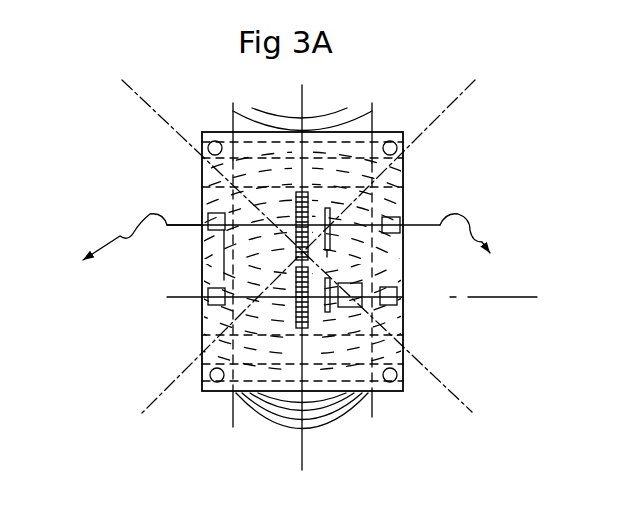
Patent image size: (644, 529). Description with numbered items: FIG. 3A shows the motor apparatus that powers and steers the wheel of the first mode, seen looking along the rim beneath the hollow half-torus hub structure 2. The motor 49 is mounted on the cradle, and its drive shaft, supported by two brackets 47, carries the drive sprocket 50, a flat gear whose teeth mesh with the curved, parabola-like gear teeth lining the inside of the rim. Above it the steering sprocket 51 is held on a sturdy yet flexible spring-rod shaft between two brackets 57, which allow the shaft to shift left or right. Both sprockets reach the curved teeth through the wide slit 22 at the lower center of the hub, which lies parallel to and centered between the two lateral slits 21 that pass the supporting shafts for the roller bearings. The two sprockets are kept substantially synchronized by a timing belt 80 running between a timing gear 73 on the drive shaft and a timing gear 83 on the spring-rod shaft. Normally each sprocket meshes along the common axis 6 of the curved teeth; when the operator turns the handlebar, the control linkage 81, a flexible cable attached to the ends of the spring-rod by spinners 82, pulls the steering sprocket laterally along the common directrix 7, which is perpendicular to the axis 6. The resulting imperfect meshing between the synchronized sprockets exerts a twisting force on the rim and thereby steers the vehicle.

The hollow half-torus hub structure 2 is at (138, 413).
The common axis 6 is at (300, 458).
The common directrix 7 is at (500, 299).
The lateral slits 21 is at (450, 382).
The wide slit 22 is at (270, 301).
The brackets 47 is at (206, 302).
The motor 49 is at (383, 279).
The drive sprocket 50 is at (295, 279).
The steering sprocket 51 is at (294, 196).
The brackets 57 is at (205, 210).
The timing gear 73 is at (334, 314).
The timing belt 80 is at (333, 252).
The control linkage 81 is at (500, 228).
The spinners 82 is at (143, 213).
The timing gear 83 is at (336, 211).